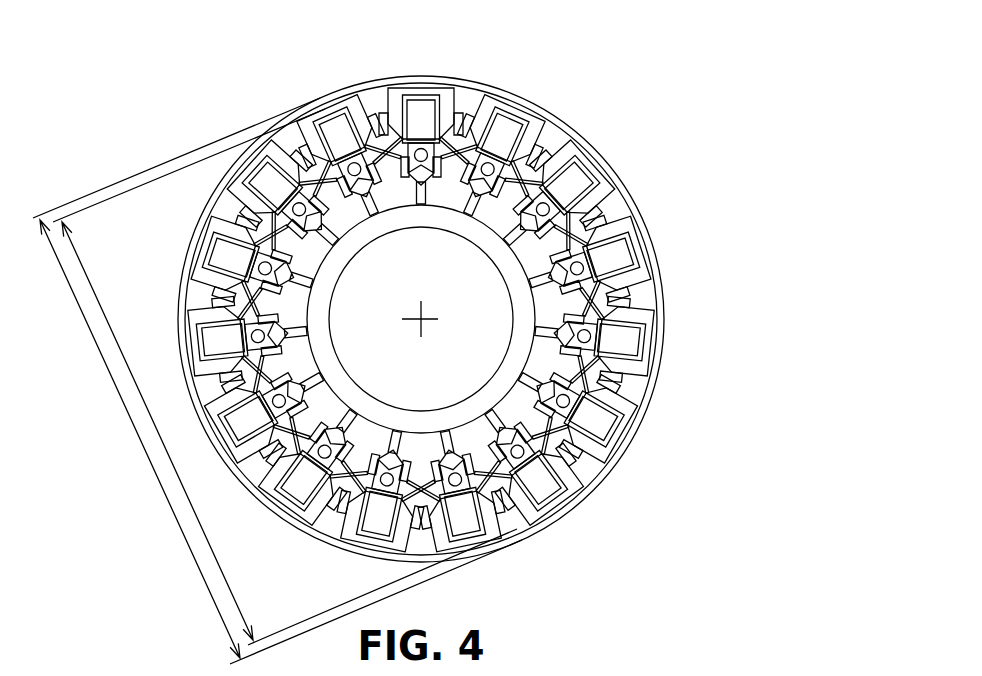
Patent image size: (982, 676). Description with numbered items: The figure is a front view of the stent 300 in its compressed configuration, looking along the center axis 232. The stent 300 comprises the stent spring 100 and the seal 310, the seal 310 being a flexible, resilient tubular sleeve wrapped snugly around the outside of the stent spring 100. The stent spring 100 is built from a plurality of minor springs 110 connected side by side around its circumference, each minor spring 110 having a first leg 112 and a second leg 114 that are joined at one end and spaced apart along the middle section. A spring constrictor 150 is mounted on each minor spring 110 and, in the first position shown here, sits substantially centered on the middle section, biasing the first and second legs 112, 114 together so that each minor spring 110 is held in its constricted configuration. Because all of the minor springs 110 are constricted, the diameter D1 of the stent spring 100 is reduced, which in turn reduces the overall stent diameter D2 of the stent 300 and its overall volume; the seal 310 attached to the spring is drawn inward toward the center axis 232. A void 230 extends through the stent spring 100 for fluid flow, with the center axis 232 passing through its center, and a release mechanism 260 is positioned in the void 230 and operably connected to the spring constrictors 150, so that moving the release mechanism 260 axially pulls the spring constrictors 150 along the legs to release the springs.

The stent spring 100 is at (495, 282).
The minor spring 110 is at (473, 123).
The first leg 112 is at (308, 107).
The second leg 114 is at (318, 128).
The spring constrictor 150 is at (488, 282).
The void 230 is at (556, 349).
The center axis 232 is at (420, 320).
The release mechanism 260 is at (485, 400).
The stent 300 is at (455, 314).
The seal 310 is at (188, 226).
The diameter of the stent spring D1 is at (158, 432).
The overall stent diameter D2 is at (108, 375).